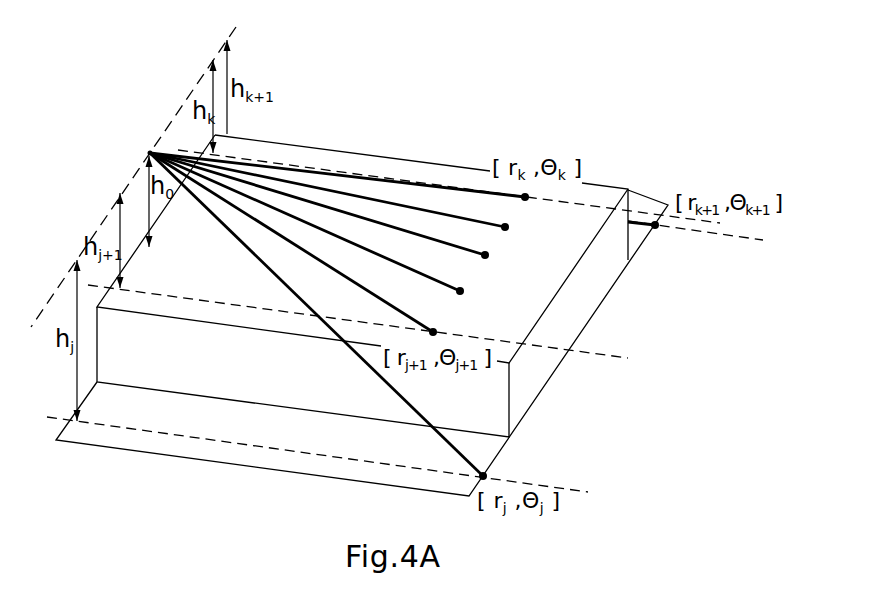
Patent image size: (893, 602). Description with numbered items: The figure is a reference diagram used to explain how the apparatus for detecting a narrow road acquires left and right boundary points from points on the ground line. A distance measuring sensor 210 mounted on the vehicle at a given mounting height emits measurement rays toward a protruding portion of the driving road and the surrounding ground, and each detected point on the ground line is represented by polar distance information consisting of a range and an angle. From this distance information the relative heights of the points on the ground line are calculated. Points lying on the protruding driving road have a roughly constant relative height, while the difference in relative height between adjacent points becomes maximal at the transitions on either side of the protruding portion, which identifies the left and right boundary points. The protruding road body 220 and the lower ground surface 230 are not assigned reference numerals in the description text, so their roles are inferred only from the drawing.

The distance measuring sensor 210 is at (150, 153).
The object / step (unlabeled in figure) 220 is at (362, 286).
The ground surface (unlabeled in figure) 230 is at (362, 343).